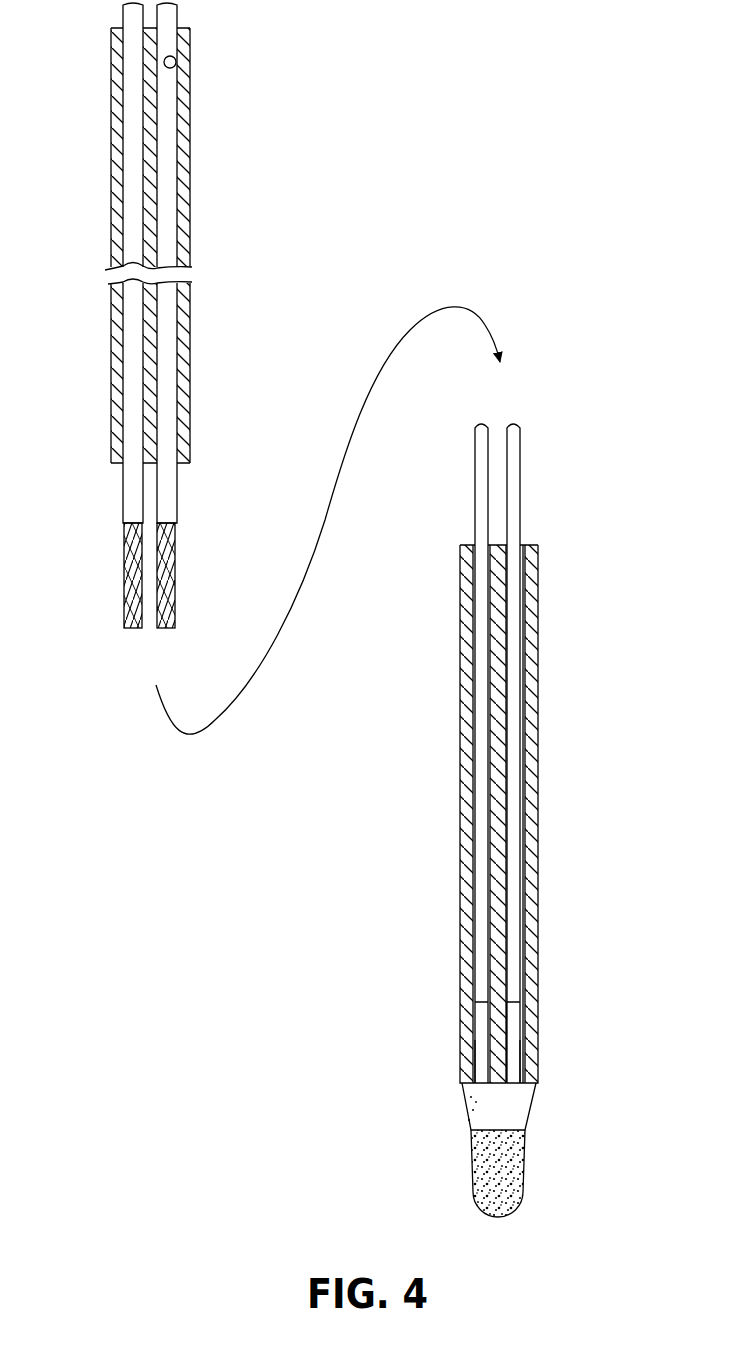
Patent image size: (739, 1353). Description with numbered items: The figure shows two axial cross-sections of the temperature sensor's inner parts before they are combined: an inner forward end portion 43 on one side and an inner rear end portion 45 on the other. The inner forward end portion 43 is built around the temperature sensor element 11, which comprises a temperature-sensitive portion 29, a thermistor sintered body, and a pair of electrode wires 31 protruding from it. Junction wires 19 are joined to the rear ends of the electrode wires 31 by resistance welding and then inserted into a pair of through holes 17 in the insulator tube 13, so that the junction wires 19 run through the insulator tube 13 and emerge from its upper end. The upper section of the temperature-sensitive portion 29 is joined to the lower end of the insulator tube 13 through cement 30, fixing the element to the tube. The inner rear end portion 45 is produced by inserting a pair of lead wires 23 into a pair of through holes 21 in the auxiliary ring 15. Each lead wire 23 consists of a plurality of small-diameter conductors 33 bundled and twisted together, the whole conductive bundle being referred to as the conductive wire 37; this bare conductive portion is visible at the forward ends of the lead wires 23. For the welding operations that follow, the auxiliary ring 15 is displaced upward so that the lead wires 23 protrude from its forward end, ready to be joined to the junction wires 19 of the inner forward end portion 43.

The temperature sensor element 11 is at (513, 820).
The insulator tube 13 is at (537, 685).
The auxiliary ring 15 is at (190, 89).
The through holes 17 is at (522, 620).
The junction wires 19 is at (513, 473).
The through holes 21 is at (178, 56).
The lead wires 23 is at (168, 353).
The temperature-sensitive portion 29 is at (510, 1168).
The cement 30 is at (505, 1103).
The electrode wires 31 is at (537, 1027).
The conductors 33 is at (132, 571).
The conductive wire 37 is at (132, 608).
The inner forward end portion 43 is at (557, 753).
The inner rear end portion 45 is at (171, 315).